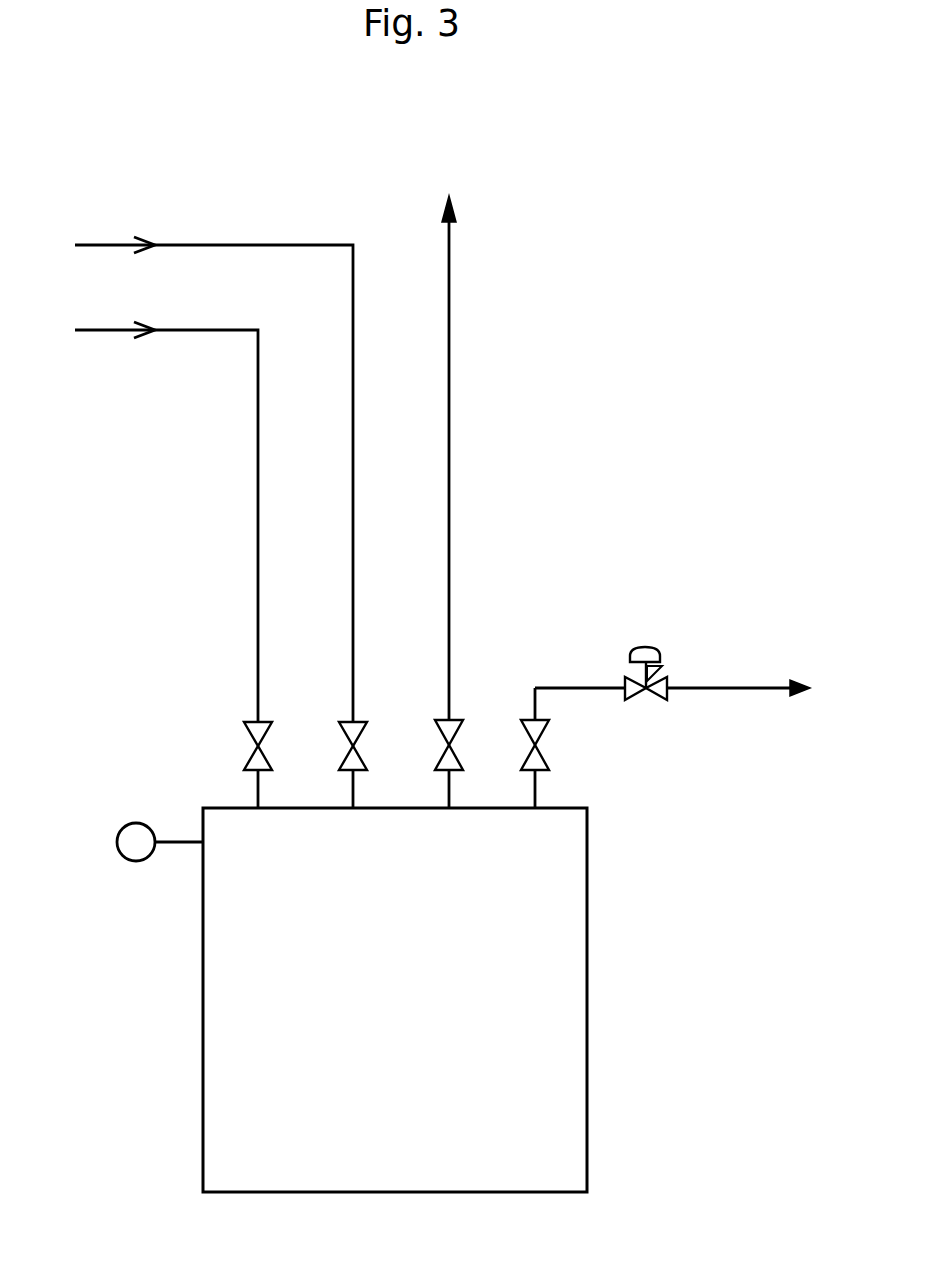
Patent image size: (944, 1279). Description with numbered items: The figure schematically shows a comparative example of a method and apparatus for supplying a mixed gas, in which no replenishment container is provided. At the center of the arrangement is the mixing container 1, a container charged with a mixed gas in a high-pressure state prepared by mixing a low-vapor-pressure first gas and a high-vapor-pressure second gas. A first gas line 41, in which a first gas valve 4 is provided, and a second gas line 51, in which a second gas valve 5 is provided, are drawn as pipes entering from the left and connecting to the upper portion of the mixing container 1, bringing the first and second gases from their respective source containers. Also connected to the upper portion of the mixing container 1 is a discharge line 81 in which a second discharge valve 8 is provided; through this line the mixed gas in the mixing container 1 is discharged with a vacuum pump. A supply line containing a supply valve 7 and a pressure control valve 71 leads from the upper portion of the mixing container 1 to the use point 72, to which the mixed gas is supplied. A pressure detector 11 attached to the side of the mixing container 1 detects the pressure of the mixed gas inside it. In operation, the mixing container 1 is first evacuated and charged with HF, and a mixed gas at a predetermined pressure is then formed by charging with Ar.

The mixing container 1 is at (588, 1000).
The pressure detector 11 is at (120, 832).
The first gas valve 4 is at (252, 762).
The first gas line 41 is at (258, 559).
The second gas valve 5 is at (347, 762).
The second gas line 51 is at (353, 559).
The supply valve 7 is at (543, 758).
The pressure control valve 71 is at (652, 646).
The use point 72 is at (858, 700).
The second discharge valve 8 is at (456, 758).
The discharge line 81 is at (449, 559).